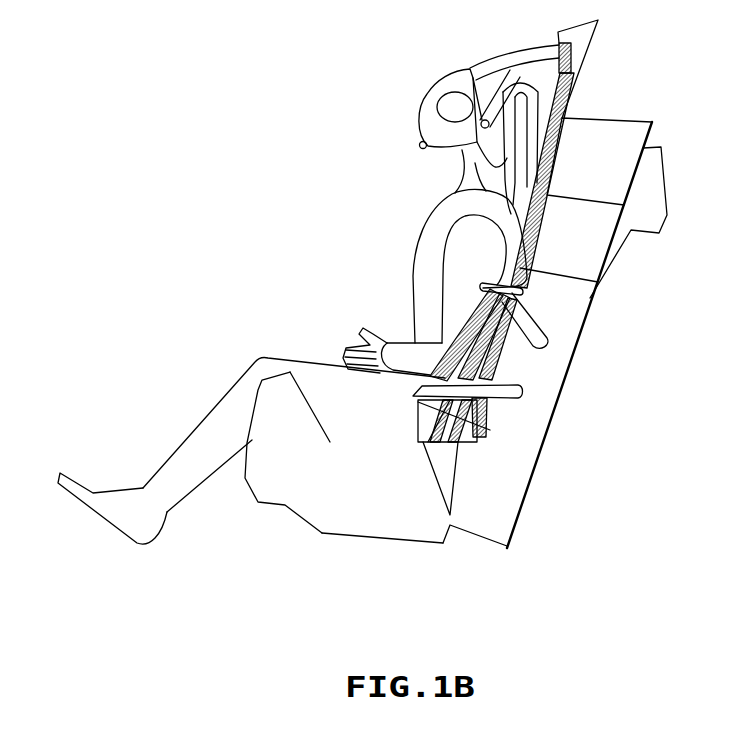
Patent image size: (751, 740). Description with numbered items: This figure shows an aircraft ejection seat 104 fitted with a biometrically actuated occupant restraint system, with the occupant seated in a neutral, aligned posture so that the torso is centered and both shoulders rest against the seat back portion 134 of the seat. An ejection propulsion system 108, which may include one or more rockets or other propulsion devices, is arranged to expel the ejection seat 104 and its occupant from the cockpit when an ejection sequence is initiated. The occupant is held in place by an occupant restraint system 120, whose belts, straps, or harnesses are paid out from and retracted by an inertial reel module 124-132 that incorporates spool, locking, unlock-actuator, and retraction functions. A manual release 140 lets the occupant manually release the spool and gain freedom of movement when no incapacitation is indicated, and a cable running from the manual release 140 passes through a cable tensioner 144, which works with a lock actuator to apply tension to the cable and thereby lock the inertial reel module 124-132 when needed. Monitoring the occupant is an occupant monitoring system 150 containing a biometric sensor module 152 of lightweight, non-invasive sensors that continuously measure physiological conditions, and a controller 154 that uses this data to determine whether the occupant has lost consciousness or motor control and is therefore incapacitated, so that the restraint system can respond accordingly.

The ejection seat 104 is at (622, 97).
The ejection propulsion system 108 is at (464, 473).
The occupant restraint system 120 is at (640, 262).
The inertial reel module 124-132 is at (617, 301).
The seat back portion 134 is at (517, 292).
The manual release 140 is at (426, 413).
The cable tensioner 144 is at (350, 407).
The occupant monitoring system 150 is at (331, 452).
The biometric sensor module 152 is at (599, 161).
The controller 154 is at (382, 521).